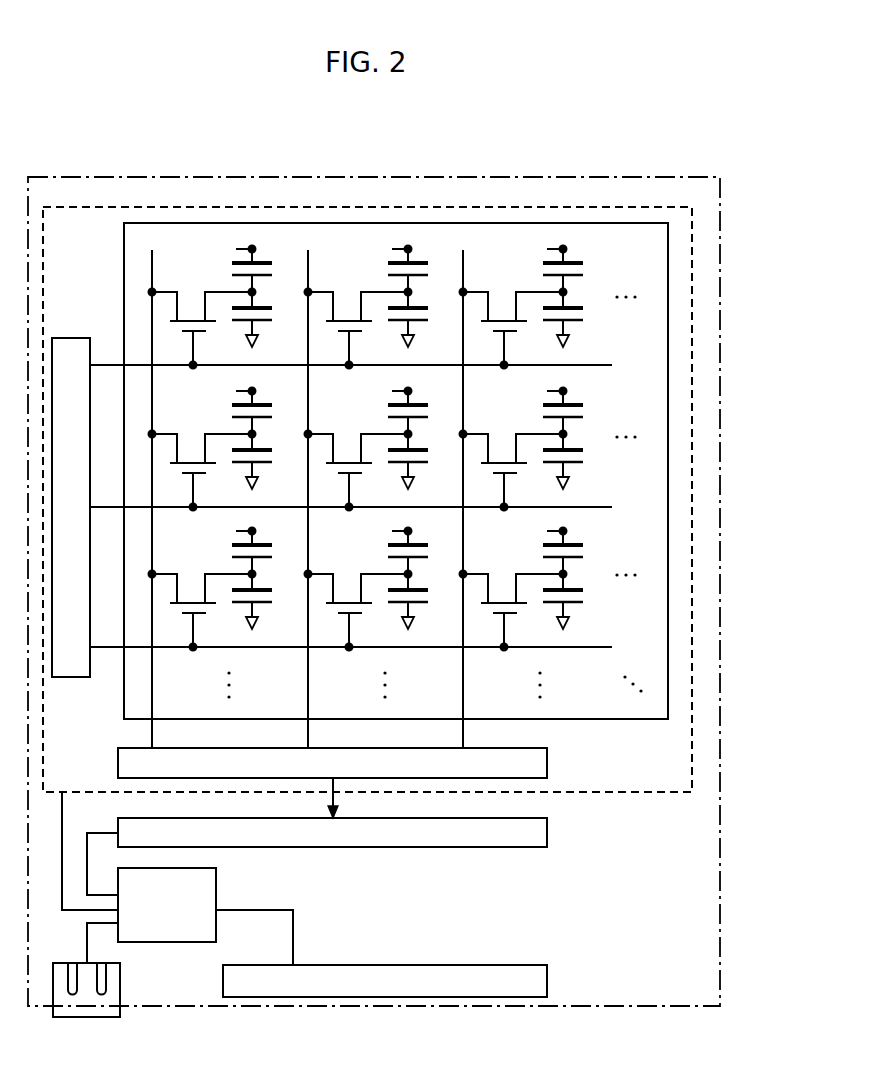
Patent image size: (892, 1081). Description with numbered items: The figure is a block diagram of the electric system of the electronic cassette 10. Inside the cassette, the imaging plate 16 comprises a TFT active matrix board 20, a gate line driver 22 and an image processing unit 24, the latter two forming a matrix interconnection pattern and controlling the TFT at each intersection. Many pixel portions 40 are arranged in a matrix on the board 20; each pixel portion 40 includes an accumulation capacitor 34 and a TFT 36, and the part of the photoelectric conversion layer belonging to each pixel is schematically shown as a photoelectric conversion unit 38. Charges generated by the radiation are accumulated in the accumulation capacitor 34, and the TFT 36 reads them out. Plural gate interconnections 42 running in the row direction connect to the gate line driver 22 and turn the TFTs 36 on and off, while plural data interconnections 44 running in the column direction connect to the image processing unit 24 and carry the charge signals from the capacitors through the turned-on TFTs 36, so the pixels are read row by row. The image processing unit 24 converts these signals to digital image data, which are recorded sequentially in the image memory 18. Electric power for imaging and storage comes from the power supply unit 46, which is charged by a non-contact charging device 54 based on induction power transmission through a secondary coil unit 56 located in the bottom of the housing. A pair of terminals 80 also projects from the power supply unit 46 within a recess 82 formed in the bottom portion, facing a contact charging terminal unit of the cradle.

The electronic cassette 10 is at (540, 176).
The imaging plate 16 is at (695, 371).
The image memory 18 is at (547, 827).
The TFT active matrix board 20 is at (668, 268).
The gate line driver 22 is at (68, 337).
The image processing unit 24 is at (547, 757).
The accumulation capacitor 34 is at (272, 320).
The TFT 36 is at (198, 319).
The photoelectric conversion unit 38 is at (271, 263).
The pixel portion 40 is at (219, 254).
The gate interconnection 42 is at (612, 365).
The data interconnection 44 is at (153, 668).
The power supply unit 46 is at (216, 889).
The non-contact charging device 54 is at (423, 960).
The secondary coil unit 56 is at (222, 979).
The terminals 80 is at (76, 984).
The recess 82 is at (58, 1017).